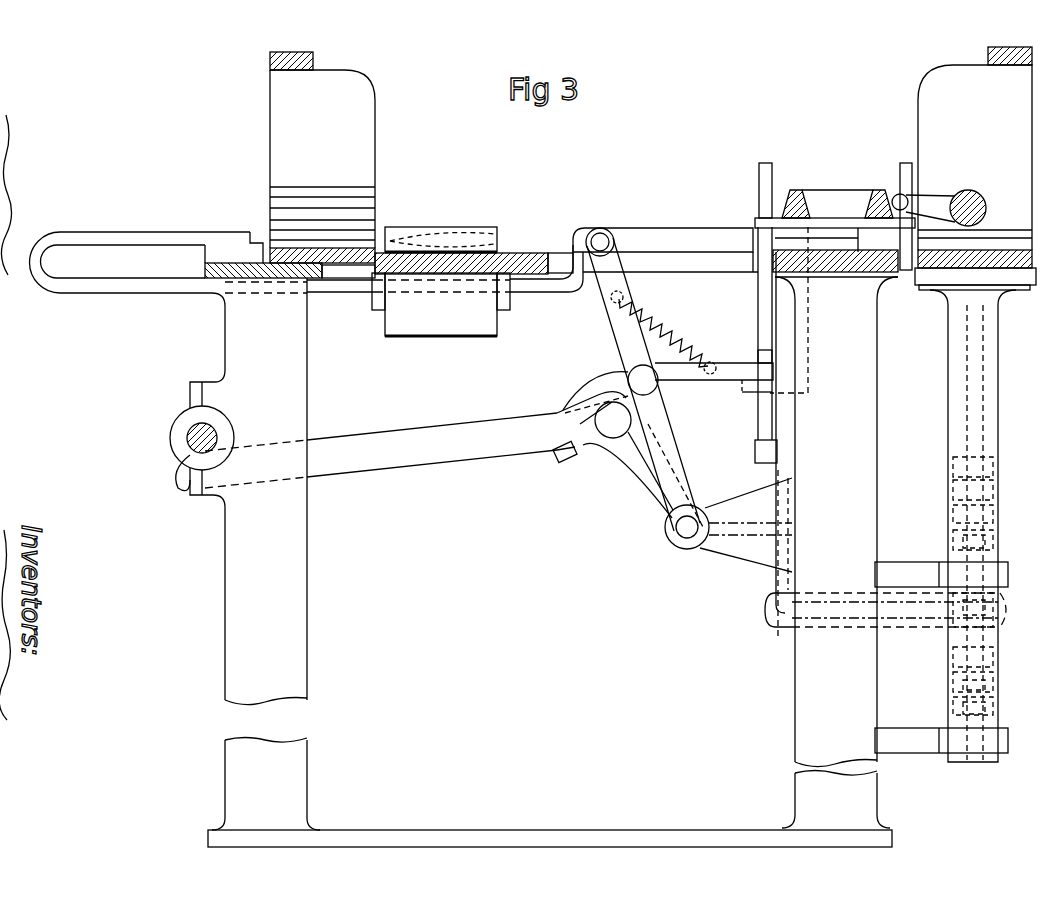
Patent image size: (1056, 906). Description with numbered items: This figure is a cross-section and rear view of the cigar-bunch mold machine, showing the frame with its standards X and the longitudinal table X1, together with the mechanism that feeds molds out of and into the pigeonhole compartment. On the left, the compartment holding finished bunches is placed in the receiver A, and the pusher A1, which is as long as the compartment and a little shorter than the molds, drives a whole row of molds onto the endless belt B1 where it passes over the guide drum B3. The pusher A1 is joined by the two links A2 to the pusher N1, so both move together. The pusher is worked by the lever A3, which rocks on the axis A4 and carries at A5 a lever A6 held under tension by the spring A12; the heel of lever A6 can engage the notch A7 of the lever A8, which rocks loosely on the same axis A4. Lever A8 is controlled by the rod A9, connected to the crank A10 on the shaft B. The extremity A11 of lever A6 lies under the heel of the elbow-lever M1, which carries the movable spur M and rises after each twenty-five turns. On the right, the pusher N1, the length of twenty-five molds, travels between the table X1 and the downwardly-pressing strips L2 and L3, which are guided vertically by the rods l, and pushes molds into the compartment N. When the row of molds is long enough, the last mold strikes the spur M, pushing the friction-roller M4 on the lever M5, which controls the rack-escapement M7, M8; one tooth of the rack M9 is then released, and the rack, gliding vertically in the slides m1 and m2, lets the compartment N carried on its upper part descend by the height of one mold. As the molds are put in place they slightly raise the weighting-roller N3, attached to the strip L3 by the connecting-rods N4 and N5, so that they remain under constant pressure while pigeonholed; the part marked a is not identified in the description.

The receiver A is at (322, 157).
The pusher A1 is at (146, 257).
The links A2 is at (362, 279).
The lever A3 is at (643, 379).
The axis A4 is at (690, 538).
The pivot of lever A6 A5 is at (643, 380).
The lever A6 is at (610, 385).
The notch A7 is at (580, 432).
The lever A8 is at (649, 464).
The rod A9 is at (415, 440).
The crank A10 is at (174, 473).
The extremity of lever A6 A11 is at (770, 371).
The spring A12 is at (663, 332).
The shaft B is at (185, 437).
The endless belt B1 is at (500, 256).
The guide drum B3 is at (441, 304).
The die plate a is at (441, 228).
The pigeonhole compartment N is at (975, 168).
The pusher N1 is at (663, 241).
The weighting-roller N3 is at (985, 208).
The connecting-rod N4 is at (923, 204).
The connecting-rod N5 is at (953, 190).
The movable spur M is at (760, 240).
The elbow-lever M1 is at (766, 358).
The friction-roller M4 is at (756, 448).
The lever M5 is at (790, 478).
The rack-escapement M7 is at (985, 557).
The rack-escapement M8 is at (975, 690).
The rack M9 is at (973, 526).
The slide m1 is at (941, 575).
The slide m2 is at (941, 741).
The rods l is at (762, 192).
The downwardly-pressing strip L2 is at (835, 197).
The downwardly-pressing strip L3 is at (875, 192).
The standards X is at (553, 562).
The longitudinal table X1 is at (848, 272).